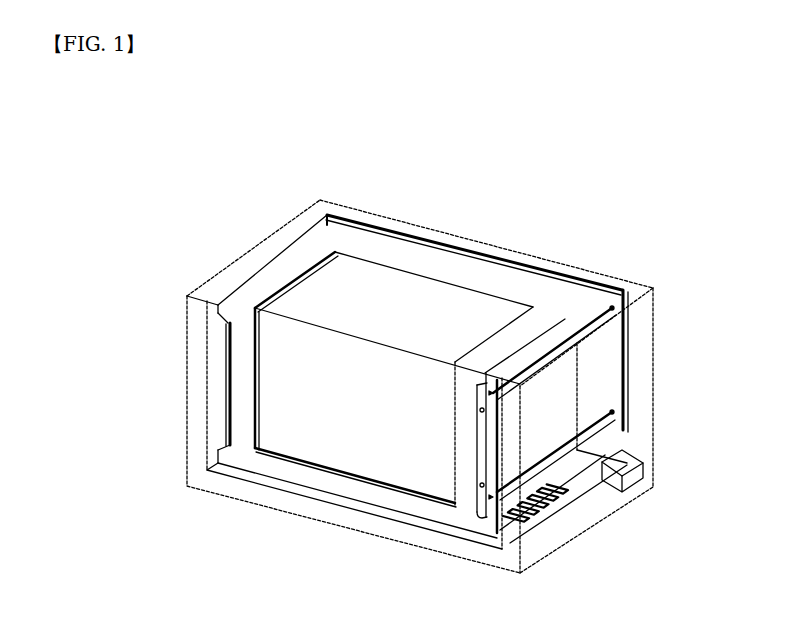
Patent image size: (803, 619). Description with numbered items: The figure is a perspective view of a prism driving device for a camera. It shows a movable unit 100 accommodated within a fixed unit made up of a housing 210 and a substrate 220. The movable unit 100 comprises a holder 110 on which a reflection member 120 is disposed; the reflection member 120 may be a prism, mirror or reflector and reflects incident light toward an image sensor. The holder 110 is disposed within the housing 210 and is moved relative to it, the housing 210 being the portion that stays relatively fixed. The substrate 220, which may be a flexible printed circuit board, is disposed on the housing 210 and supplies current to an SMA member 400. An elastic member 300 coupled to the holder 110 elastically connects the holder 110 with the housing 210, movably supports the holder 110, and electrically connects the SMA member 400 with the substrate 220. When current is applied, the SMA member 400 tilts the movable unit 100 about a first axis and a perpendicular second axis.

The movable unit 100 is at (497, 153).
The holder 110 is at (523, 287).
The reflection member 120 is at (405, 310).
The housing 210 is at (653, 373).
The substrate 220 is at (628, 323).
The elastic member 300 is at (484, 462).
The SMA member 400 is at (563, 353).